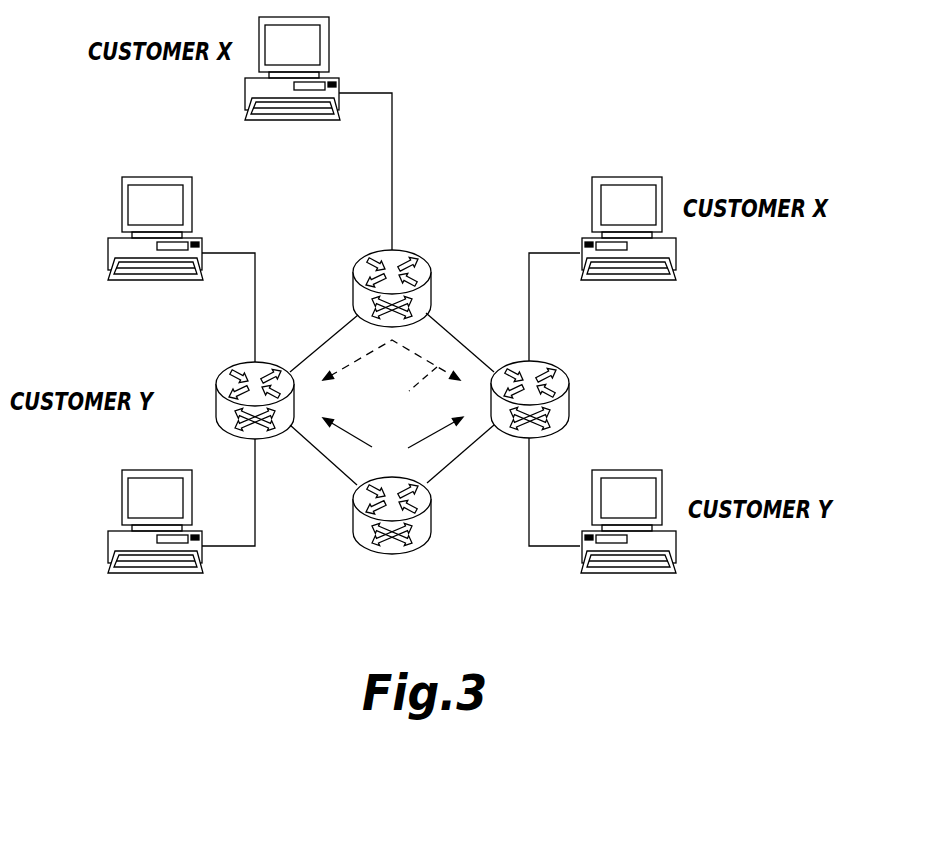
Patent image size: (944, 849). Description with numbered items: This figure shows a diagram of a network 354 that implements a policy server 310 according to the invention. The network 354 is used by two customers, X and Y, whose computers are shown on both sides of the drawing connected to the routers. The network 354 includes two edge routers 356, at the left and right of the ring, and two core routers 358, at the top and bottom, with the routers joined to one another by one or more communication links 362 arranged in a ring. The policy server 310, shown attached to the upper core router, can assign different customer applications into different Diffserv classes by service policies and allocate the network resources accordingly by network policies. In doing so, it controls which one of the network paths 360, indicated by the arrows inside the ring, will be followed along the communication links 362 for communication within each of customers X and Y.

The policy server 310 is at (329, 52).
The network 354 is at (553, 125).
The edge routers 356 is at (216, 391).
The core routers 358 is at (425, 262).
The network paths 360 is at (433, 430).
The communication links 362 is at (324, 340).